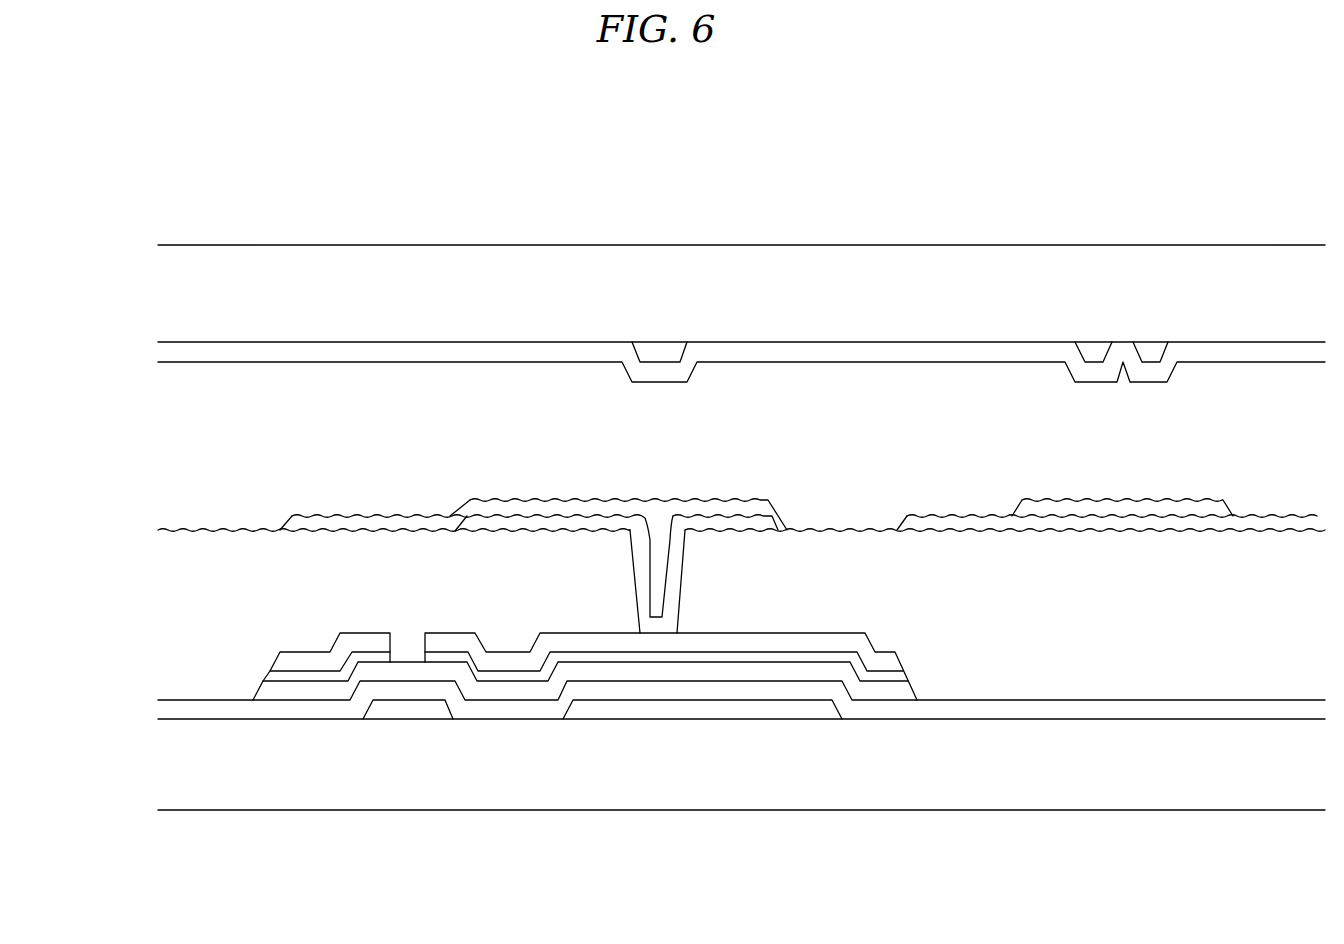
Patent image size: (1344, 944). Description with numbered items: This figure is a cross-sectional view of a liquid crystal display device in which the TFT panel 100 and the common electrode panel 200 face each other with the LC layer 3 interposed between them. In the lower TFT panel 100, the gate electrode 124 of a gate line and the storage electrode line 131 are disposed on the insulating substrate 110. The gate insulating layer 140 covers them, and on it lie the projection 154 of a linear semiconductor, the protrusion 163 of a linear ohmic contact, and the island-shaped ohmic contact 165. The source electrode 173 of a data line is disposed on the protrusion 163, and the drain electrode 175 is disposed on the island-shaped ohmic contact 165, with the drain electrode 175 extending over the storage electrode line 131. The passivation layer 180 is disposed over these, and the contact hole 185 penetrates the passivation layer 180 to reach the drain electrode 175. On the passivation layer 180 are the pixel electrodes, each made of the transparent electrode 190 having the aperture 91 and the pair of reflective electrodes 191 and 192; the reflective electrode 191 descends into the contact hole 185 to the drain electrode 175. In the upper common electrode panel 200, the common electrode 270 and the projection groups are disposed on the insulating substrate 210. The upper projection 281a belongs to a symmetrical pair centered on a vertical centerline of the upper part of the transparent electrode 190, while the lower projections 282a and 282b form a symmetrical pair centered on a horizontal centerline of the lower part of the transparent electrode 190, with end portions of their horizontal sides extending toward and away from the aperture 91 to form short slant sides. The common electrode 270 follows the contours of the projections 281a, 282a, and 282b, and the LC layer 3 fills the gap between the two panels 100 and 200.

The LC layer 3 is at (152, 449).
The aperture 91 is at (845, 508).
The TFT panel 100 is at (118, 682).
The insulating substrate 110 is at (830, 790).
The gate electrode 124 is at (417, 707).
The storage electrode line 131 is at (715, 707).
The gate insulating layer 140 is at (932, 705).
The projection 154 is at (397, 670).
The protrusion 163 is at (320, 675).
The island-shaped ohmic contact 165 is at (505, 675).
The source electrode 173 is at (290, 662).
The drain electrode 175 is at (623, 642).
The passivation layer 180 is at (217, 678).
The contact hole 185 is at (637, 571).
The transparent electrode 190 is at (512, 520).
The reflective electrode 191 is at (399, 522).
The reflective electrode 192 is at (1103, 515).
The common electrode panel 200 is at (122, 301).
The insulating substrate 210 is at (621, 272).
The common electrode 270 is at (840, 352).
The upper projection 281a is at (656, 349).
The lower projection 282a is at (1099, 350).
The lower projection 282b is at (1146, 350).